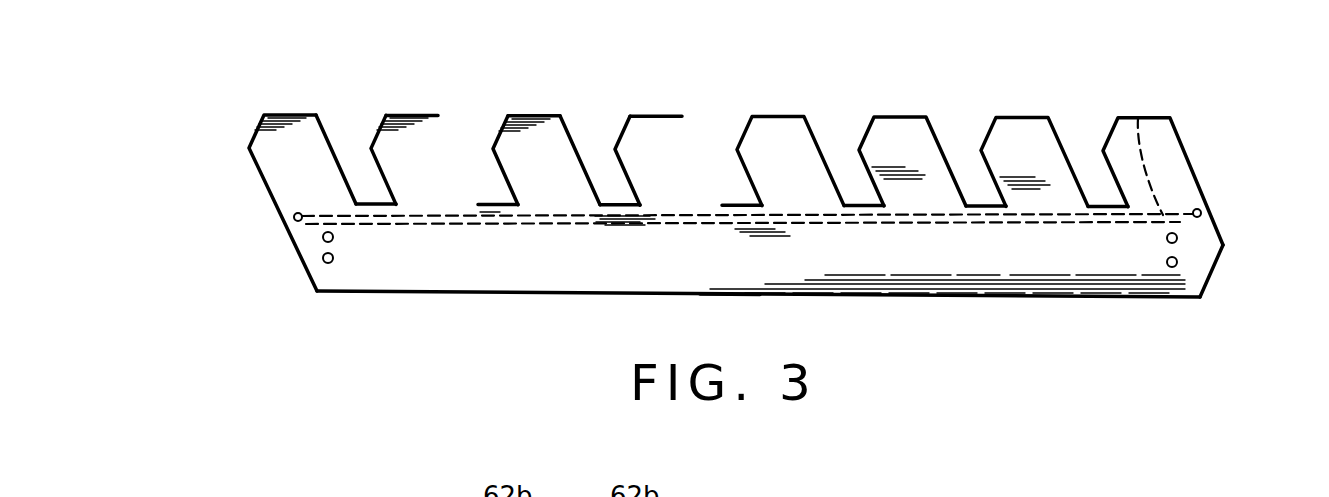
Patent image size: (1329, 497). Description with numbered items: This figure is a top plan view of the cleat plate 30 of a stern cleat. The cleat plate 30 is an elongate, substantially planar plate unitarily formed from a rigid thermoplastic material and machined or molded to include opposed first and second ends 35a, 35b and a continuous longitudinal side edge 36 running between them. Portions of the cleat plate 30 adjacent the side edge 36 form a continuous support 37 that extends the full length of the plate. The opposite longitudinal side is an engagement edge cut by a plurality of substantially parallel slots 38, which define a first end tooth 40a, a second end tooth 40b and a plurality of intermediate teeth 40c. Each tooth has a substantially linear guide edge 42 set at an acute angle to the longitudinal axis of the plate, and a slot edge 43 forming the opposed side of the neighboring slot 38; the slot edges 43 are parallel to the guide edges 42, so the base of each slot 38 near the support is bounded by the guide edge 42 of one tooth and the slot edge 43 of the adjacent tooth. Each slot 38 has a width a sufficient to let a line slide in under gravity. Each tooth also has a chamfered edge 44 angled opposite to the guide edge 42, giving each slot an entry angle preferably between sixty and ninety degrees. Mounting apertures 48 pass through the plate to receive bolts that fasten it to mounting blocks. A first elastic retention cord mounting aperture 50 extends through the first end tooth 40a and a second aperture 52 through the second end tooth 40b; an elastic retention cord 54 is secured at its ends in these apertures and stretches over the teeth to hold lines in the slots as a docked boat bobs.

The cleat plate 30 is at (298, 250).
The first end 35a is at (1218, 216).
The second end 35b is at (261, 172).
The continuous longitudinal side edge 36 is at (726, 297).
The continuous support 37 is at (595, 256).
The slot 38 is at (357, 170).
The first end tooth 40a is at (1172, 148).
The second end tooth 40b is at (270, 158).
The intermediate teeth 40c is at (888, 135).
The guide edge 42 is at (324, 117).
The slot edge 43 is at (510, 187).
The chamfered edge 44 is at (376, 134).
The mounting apertures 48 is at (324, 242).
The first elastic retention cord mounting aperture 50 is at (1200, 210).
The second elastic retention cord mounting aperture 52 is at (294, 218).
The elastic retention cord 54 is at (1138, 115).
The slot width a is at (624, 171).